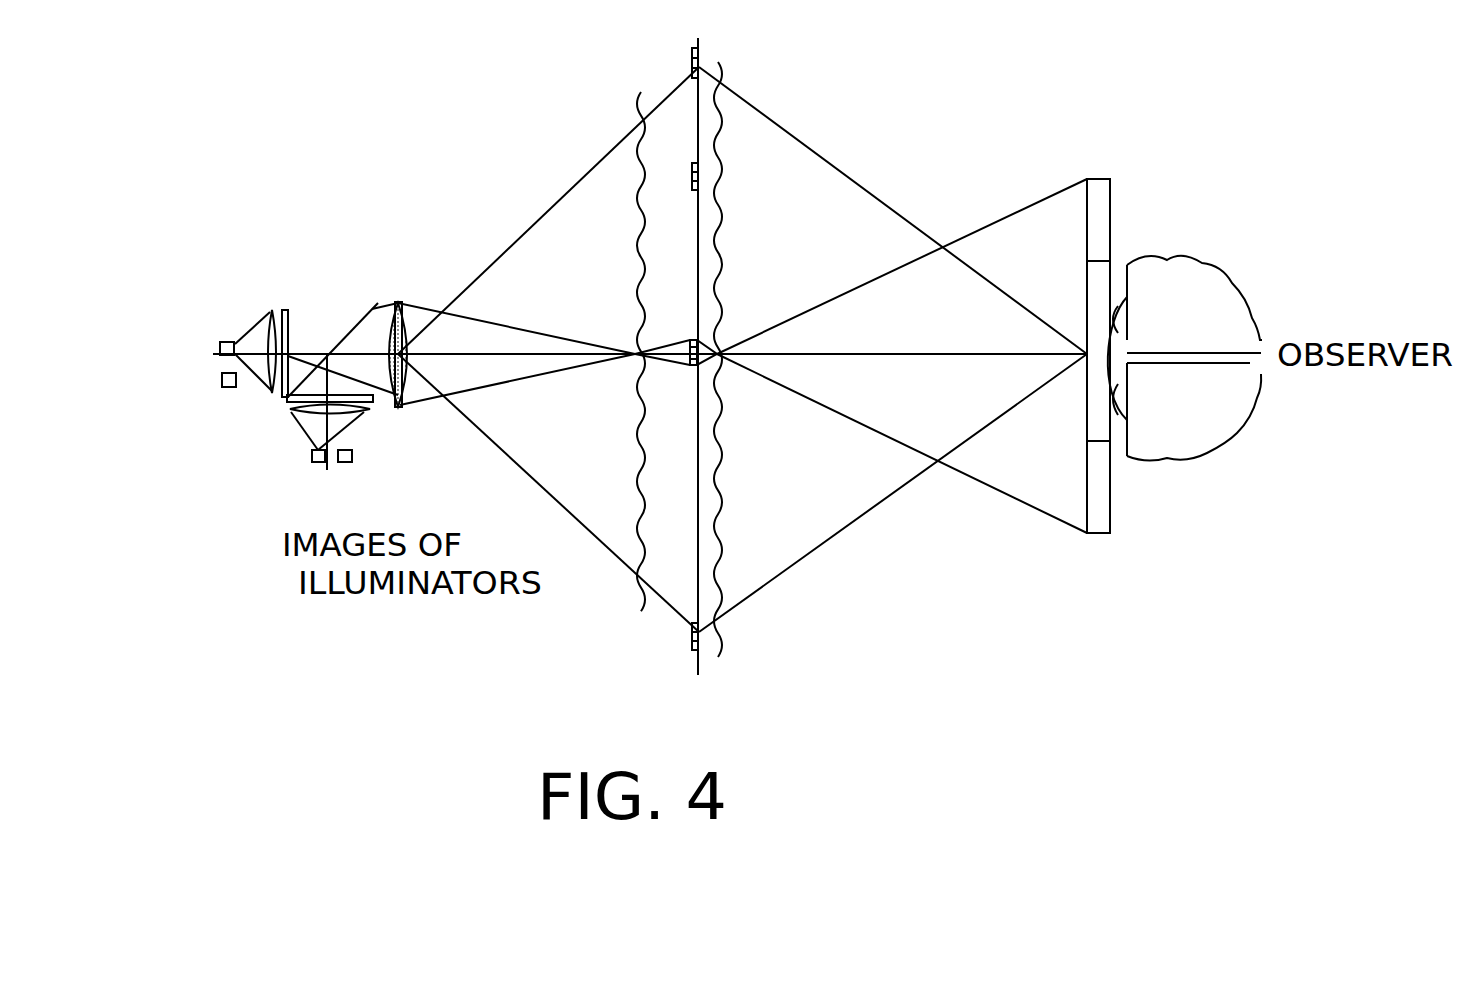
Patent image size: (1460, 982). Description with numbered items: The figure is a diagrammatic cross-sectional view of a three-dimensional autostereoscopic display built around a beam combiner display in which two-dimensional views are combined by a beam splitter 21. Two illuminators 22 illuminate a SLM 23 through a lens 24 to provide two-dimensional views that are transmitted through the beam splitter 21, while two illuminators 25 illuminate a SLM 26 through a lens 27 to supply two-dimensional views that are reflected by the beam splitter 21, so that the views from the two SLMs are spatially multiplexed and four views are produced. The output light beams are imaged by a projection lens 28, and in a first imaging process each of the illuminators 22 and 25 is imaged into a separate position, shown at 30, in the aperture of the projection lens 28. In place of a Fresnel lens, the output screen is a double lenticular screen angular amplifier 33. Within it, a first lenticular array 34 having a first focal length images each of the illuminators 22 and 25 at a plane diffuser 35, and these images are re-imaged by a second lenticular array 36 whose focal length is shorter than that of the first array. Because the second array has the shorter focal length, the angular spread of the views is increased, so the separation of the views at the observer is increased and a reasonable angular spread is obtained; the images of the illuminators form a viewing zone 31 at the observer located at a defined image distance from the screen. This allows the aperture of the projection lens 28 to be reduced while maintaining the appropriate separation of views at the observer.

The beam splitter 21 is at (373, 307).
The illuminators 22 is at (216, 336).
The SLM 23 is at (284, 310).
The lens 24 is at (270, 312).
The illuminators 25 is at (321, 474).
The SLM 26 is at (373, 410).
The lens 27 is at (287, 410).
The projection lens 28 is at (407, 303).
The images of the illuminators 30 is at (400, 407).
The image of the illuminators 31 is at (1100, 202).
The double lenticular screen angular amplifier 33 is at (953, 369).
The first lenticular array 34 is at (663, 572).
The plane diffuser 35 is at (697, 657).
The second lenticular array 36 is at (707, 575).